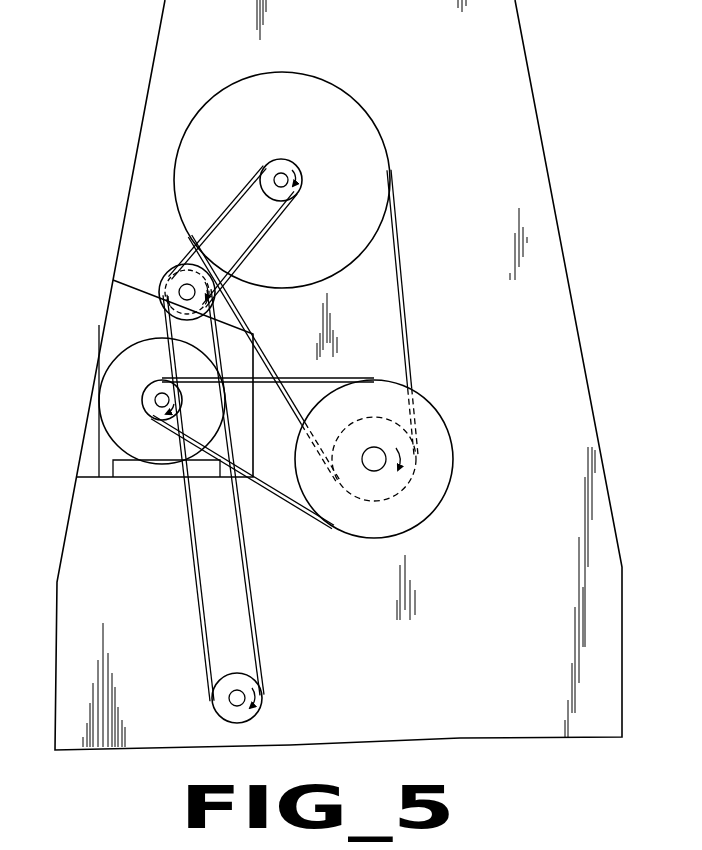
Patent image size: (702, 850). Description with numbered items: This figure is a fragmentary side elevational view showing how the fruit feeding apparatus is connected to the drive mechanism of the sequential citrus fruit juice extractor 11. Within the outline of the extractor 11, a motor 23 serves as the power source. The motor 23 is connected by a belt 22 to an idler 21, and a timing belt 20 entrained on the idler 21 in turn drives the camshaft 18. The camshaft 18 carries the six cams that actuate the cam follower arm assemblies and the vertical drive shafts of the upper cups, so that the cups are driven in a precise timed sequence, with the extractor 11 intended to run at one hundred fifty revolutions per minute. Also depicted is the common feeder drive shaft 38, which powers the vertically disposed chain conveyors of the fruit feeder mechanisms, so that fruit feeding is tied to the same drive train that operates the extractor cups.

The sequential citrus fruit juice extractor 11 is at (543, 68).
The camshaft 18 is at (270, 178).
The timing belt 20 is at (402, 278).
The idler 21 is at (445, 458).
The belt 22 is at (281, 490).
The motor 23 is at (110, 388).
The feeder drive shaft 38 is at (229, 698).